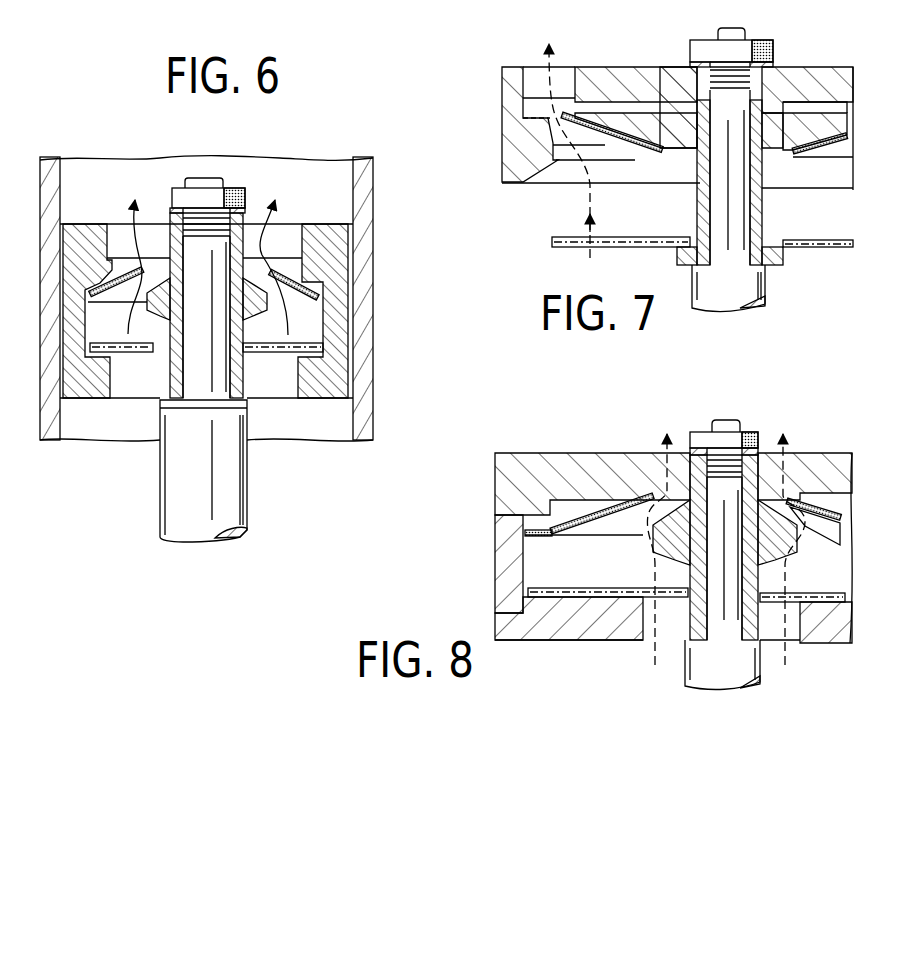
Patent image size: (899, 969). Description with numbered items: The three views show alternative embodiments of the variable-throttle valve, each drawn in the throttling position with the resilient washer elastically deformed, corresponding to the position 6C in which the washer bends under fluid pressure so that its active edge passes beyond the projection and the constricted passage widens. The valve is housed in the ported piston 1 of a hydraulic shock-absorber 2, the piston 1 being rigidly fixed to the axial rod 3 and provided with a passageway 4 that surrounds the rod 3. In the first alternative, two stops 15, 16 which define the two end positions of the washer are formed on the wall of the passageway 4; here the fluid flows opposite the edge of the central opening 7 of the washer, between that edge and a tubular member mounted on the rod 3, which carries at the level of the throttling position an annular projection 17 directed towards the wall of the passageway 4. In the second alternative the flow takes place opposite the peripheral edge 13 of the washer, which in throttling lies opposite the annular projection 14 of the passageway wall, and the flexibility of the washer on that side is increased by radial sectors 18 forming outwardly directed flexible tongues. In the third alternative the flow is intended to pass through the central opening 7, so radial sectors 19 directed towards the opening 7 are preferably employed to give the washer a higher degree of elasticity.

In FIG. 6, the ported piston 1 is at (103, 194).
In FIG. 6, the hydraulic shock-absorber 2 is at (376, 294).
In FIG. 6, the axial rod 3 is at (220, 504).
In FIG. 7, the axial rod 3 is at (721, 169).
In FIG. 8, the axial rod 3 is at (646, 554).
In FIG. 6, the passageway 4 is at (127, 398).
In FIG. 6, the position of the elastically deformed washer 6C is at (332, 318).
In FIG. 7, the position of the elastically deformed washer 6C is at (648, 152).
In FIG. 8, the position of the elastically deformed washer 6C is at (573, 532).
In FIG. 6, the central opening 7 is at (160, 262).
In FIG. 8, the central opening 7 is at (685, 500).
In FIG. 7, the peripheral edge 13 is at (555, 104).
In FIG. 8, the peripheral edge 13 is at (535, 553).
In FIG. 7, the annular projection 14 is at (558, 153).
In FIG. 6, the stop 15 is at (300, 356).
In FIG. 6, the stop 16 is at (303, 284).
In FIG. 6, the annular projection 17 is at (150, 306).
In FIG. 8, the annular projection 17 is at (653, 562).
In FIG. 7, the radial sectors 18 is at (793, 120).
In FIG. 8, the radial sectors 19 is at (822, 536).